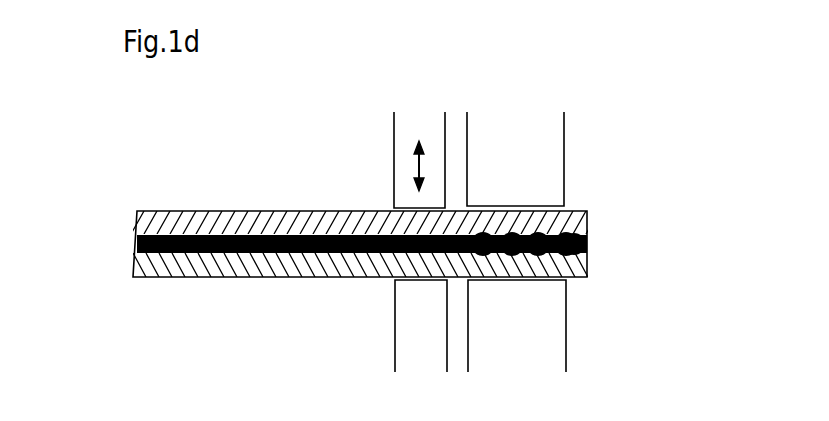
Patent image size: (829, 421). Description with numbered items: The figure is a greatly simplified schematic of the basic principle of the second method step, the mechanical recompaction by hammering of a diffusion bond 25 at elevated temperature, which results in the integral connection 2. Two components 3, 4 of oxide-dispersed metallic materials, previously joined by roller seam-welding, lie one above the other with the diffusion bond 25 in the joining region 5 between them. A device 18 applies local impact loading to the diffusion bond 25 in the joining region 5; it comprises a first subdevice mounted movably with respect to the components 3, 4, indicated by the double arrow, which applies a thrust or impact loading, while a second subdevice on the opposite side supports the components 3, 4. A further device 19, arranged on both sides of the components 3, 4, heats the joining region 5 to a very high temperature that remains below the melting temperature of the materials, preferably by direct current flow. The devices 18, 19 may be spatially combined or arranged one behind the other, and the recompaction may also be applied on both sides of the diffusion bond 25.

The integral connection 2 is at (149, 259).
The component 3 is at (140, 226).
The component 4 is at (178, 265).
The joining region 5 is at (587, 241).
The device 18 is at (427, 122).
The device 19 is at (530, 168).
The diffusion bond 25 is at (576, 230).